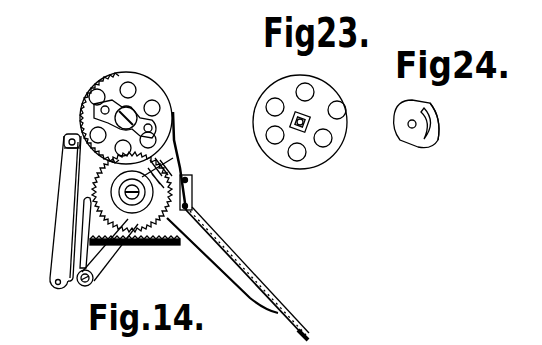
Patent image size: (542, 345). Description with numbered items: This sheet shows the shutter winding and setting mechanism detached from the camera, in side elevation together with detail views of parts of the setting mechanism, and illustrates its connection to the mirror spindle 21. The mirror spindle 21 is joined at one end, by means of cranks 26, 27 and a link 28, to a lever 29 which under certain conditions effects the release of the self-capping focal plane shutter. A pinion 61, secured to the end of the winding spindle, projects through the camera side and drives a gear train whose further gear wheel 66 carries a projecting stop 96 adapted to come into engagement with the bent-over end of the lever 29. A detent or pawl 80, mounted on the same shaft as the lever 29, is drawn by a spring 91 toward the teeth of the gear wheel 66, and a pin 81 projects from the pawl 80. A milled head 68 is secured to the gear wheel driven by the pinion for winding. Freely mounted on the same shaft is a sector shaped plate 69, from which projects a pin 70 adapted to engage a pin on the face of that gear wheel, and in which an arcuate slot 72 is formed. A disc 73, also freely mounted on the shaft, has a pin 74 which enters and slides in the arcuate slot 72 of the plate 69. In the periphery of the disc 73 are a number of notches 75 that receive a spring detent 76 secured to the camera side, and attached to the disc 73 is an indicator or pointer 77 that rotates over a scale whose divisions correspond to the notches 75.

In FIG. 14, the notches 75 is at (109, 78).
In FIG. 23, the notches 75 is at (286, 80).
In FIG. 14, the indicator or pointer 77 is at (138, 103).
In FIG. 14, the disc 73 is at (153, 98).
In FIG. 23, the disc 73 is at (316, 152).
In FIG. 14, the pinion 61 is at (89, 92).
In FIG. 14, the mirror spindle 21 is at (70, 138).
In FIG. 14, the crank 26 is at (70, 152).
In FIG. 14, the link 28 is at (63, 196).
In FIG. 14, the detent (pawl) 80 is at (86, 216).
In FIG. 14, the pin 81 is at (85, 236).
In FIG. 14, the lever 29 is at (96, 283).
In FIG. 14, the crank 27 is at (70, 286).
In FIG. 14, the spring 91 is at (156, 247).
In FIG. 14, the spring detent 76 is at (175, 125).
In FIG. 14, the gear wheel 66 is at (176, 168).
In FIG. 14, the projecting stop 96 is at (192, 194).
In FIG. 14, the milled head 68 is at (194, 217).
In FIG. 23, the pin 74 is at (309, 112).
In FIG. 24, the sector shaped plate 69 is at (408, 136).
In FIG. 24, the arcuate slot 72 is at (432, 113).
In FIG. 24, the pin 70 is at (440, 138).